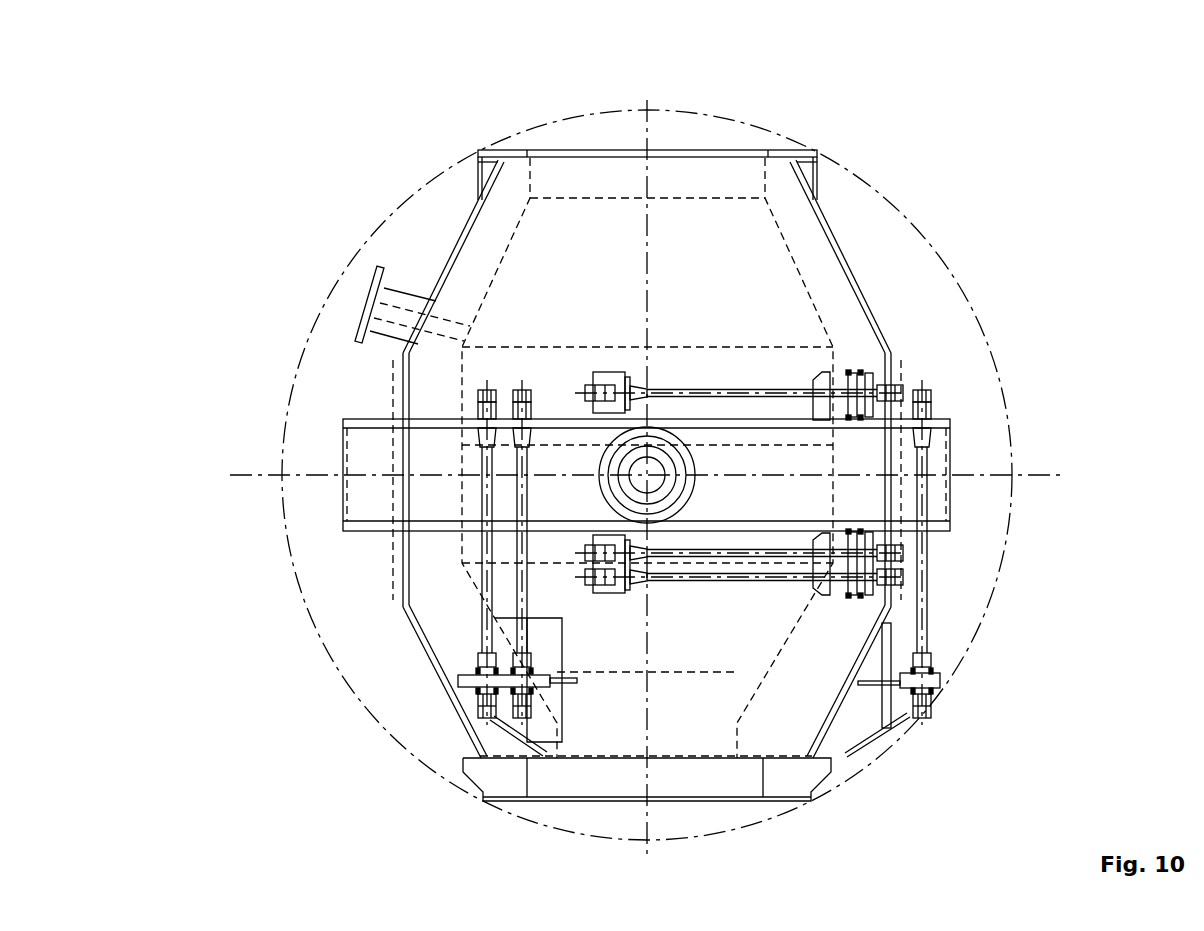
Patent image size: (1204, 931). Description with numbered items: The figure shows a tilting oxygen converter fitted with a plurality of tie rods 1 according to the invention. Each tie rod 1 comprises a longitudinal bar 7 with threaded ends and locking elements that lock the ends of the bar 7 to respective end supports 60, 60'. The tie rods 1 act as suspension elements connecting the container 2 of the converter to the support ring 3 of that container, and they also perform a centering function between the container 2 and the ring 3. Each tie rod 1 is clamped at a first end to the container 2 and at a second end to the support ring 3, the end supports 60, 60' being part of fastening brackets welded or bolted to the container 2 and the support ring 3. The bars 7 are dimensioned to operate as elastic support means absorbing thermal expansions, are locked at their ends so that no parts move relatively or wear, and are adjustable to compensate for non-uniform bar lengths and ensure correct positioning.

The tie rod 1 is at (948, 545).
The container 2 is at (808, 222).
The support ring 3 is at (368, 423).
The longitudinal bar 7 is at (772, 386).
The end support 60 is at (812, 466).
The end support 60' is at (973, 500).